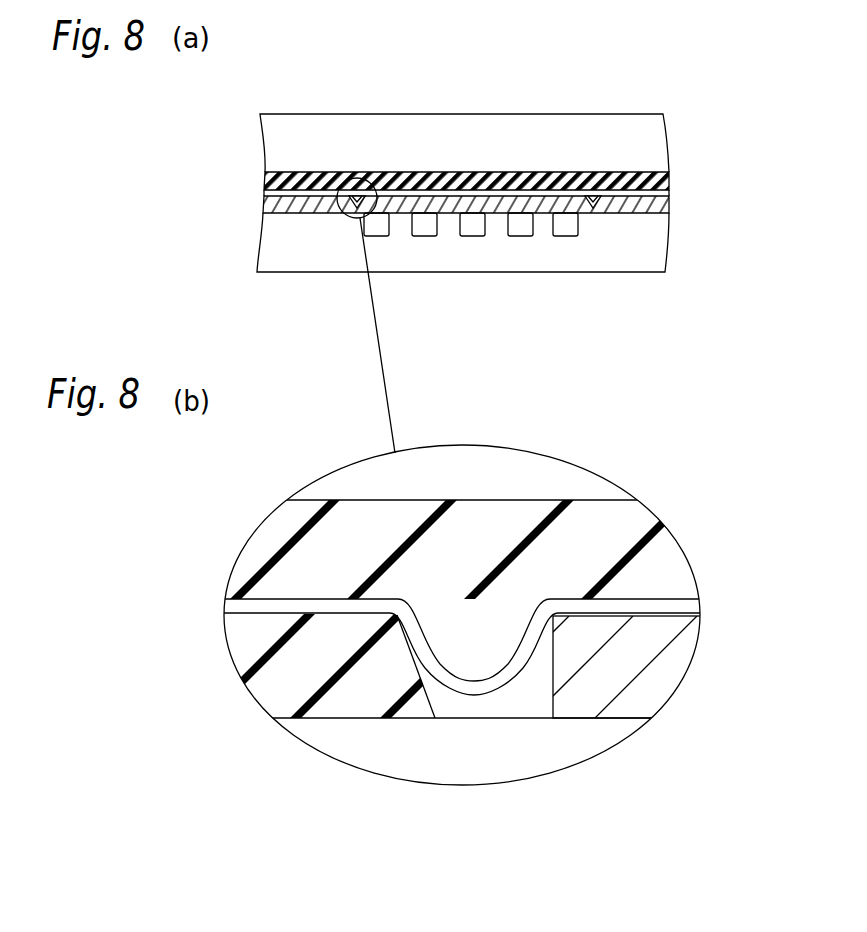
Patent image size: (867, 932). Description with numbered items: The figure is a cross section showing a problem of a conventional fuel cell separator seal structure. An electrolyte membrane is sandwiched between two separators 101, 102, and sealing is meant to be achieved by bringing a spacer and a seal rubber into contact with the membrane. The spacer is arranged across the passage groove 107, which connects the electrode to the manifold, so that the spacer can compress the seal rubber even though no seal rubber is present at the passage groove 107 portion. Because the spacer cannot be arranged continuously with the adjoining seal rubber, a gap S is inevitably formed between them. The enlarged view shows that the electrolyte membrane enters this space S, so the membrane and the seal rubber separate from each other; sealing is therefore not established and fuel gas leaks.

The separator 101 is at (285, 252).
The separator 102 is at (522, 128).
The passage groove 107 is at (580, 227).
The gap S is at (530, 706).